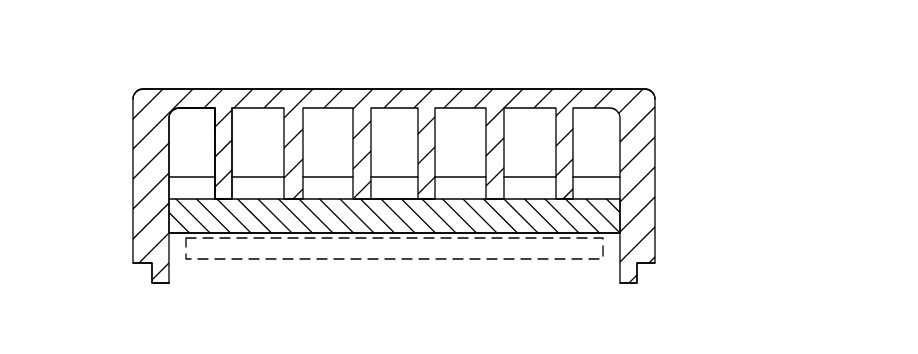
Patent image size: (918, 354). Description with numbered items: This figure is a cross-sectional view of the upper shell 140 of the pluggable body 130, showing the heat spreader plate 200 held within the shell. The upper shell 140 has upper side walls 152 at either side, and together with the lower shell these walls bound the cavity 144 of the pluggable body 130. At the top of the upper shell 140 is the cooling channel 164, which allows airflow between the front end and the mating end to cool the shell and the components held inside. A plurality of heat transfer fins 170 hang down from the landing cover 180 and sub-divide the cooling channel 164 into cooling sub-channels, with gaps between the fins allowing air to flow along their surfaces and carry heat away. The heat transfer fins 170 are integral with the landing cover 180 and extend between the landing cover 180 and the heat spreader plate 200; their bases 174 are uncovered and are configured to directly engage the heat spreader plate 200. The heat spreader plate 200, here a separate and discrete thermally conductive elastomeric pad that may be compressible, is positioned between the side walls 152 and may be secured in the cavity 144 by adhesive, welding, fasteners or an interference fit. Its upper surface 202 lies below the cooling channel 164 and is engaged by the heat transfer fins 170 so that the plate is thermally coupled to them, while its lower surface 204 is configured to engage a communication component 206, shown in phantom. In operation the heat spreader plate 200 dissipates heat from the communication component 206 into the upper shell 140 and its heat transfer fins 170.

The pluggable body 130 is at (128, 46).
The upper shell 140 is at (677, 100).
The landing cover 180 is at (325, 98).
The heat transfer fins 170 is at (228, 145).
The bases 174 is at (213, 112).
The cooling channel 164 is at (182, 153).
The upper side walls 152 is at (132, 244).
The cavity 144 is at (597, 275).
The heat spreader plate 200 is at (323, 220).
The upper surface 202 is at (392, 200).
The lower surface 204 is at (380, 233).
The communication component 206 is at (468, 246).